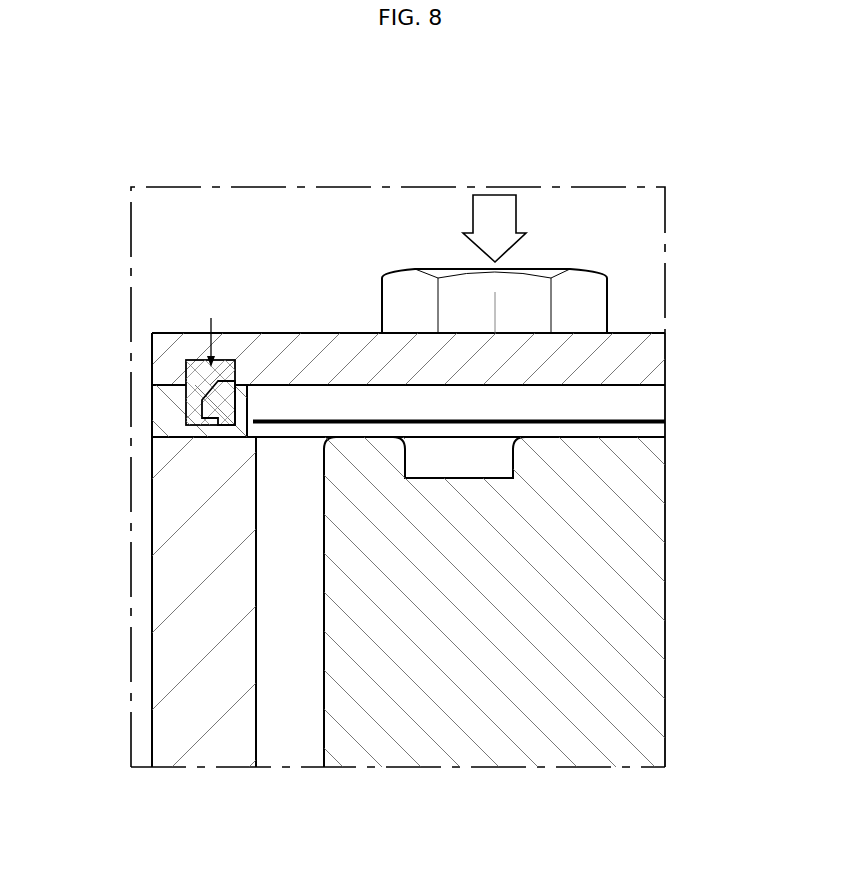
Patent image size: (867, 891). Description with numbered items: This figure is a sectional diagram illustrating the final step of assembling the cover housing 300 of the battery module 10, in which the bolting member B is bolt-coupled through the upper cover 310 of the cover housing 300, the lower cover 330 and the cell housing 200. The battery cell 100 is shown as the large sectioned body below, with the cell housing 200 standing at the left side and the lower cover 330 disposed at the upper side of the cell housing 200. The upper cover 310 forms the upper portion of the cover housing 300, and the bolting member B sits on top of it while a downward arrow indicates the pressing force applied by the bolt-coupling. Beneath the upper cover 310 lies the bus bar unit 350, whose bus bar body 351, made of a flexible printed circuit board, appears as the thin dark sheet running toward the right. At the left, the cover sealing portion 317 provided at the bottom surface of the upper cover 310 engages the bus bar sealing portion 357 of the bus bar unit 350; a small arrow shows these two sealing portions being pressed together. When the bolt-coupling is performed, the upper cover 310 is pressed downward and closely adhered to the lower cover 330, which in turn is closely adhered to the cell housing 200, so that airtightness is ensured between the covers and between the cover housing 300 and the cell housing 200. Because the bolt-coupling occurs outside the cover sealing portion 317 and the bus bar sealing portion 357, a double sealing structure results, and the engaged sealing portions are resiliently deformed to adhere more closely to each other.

The battery module 10 is at (203, 140).
The battery cell 100 is at (684, 515).
The cell housing 200 is at (183, 547).
The cover housing 300 is at (697, 366).
The upper cover 310 is at (122, 341).
The cover sealing portion 317 is at (195, 372).
The lower cover 330 is at (122, 428).
The bus bar unit 350 is at (616, 406).
The bus bar body 351 is at (648, 420).
The bus bar sealing portion 357 is at (222, 406).
The bolting member B is at (587, 300).